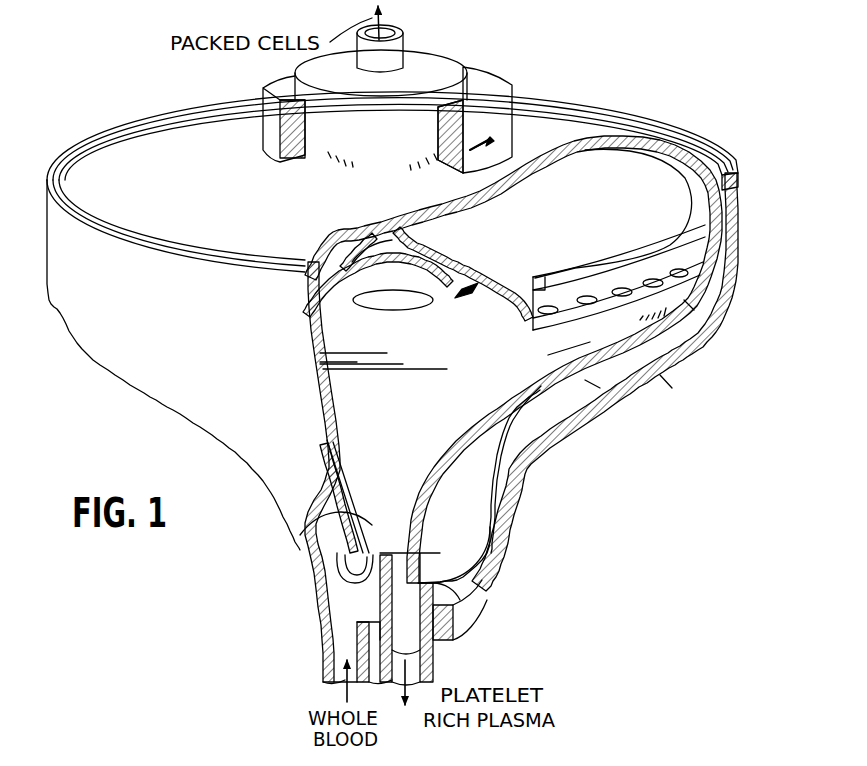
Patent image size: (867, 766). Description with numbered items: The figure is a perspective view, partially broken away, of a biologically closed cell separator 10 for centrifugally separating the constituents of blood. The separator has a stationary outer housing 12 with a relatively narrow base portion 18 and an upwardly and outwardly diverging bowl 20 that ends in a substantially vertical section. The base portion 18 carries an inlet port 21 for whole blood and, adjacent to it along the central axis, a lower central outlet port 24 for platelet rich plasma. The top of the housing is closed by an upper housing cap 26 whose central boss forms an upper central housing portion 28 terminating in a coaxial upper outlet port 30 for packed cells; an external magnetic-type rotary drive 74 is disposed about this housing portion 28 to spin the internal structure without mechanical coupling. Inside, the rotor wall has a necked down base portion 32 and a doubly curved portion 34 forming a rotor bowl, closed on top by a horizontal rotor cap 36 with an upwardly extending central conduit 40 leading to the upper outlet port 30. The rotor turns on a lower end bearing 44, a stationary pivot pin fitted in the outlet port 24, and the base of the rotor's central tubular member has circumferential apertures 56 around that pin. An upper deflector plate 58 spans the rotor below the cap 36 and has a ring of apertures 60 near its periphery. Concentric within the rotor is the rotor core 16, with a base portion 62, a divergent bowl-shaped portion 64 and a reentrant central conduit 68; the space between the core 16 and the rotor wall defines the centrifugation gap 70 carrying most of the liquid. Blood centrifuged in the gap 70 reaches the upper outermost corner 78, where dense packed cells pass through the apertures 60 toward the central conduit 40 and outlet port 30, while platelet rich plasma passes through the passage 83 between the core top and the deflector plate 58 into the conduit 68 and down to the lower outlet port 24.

The cell separator 10 is at (141, 432).
The stationary outer housing 12 is at (712, 347).
The rotor core 16 is at (672, 321).
The base portion 18 is at (320, 637).
The bowl 20 is at (668, 382).
The inlet port 21 is at (333, 662).
The lower central outlet port 24 is at (413, 663).
The upper housing cap 26 is at (168, 143).
The upper central housing portion 28 is at (432, 245).
The upper outlet port 30 is at (404, 47).
The base portion of the rotor 32 is at (487, 532).
The curved portion of the rotor wall 34 is at (592, 382).
The rotor cap 36 is at (617, 193).
The central conduit 40 is at (512, 118).
The lower end bearing 44 is at (410, 613).
The apertures 56 is at (340, 567).
The upper deflector plate 58 is at (502, 293).
The apertures 60 is at (692, 262).
The base portion of the core 62 is at (300, 535).
The divergent portion of the core 64 is at (570, 380).
The reentrant central conduit 68 is at (453, 253).
The centrifugation gap 70 is at (630, 347).
The magnetic-type rotary drive 74 is at (437, 197).
The upper outermost corner of the separator volume 78 is at (688, 306).
The passage 83 is at (470, 290).